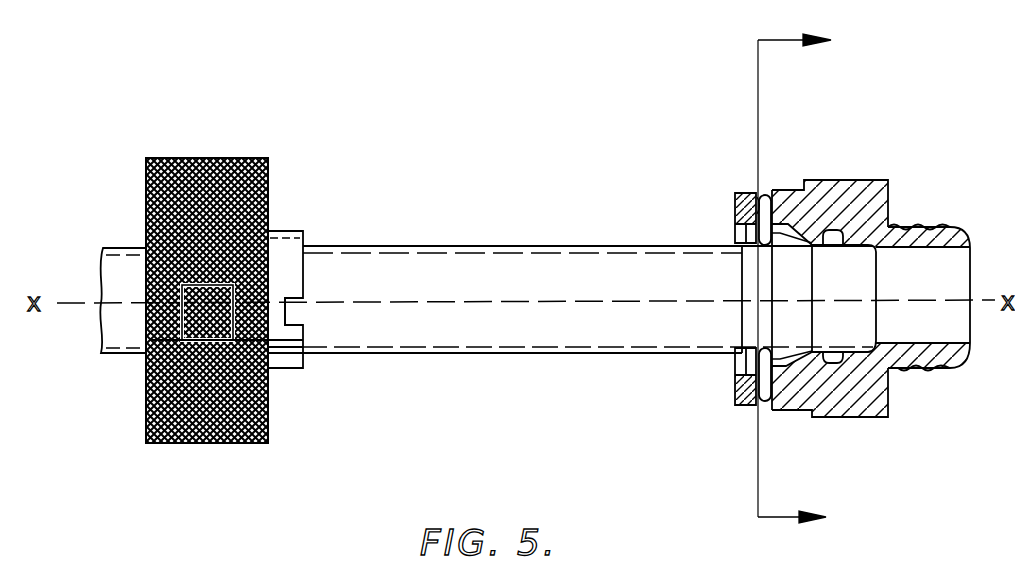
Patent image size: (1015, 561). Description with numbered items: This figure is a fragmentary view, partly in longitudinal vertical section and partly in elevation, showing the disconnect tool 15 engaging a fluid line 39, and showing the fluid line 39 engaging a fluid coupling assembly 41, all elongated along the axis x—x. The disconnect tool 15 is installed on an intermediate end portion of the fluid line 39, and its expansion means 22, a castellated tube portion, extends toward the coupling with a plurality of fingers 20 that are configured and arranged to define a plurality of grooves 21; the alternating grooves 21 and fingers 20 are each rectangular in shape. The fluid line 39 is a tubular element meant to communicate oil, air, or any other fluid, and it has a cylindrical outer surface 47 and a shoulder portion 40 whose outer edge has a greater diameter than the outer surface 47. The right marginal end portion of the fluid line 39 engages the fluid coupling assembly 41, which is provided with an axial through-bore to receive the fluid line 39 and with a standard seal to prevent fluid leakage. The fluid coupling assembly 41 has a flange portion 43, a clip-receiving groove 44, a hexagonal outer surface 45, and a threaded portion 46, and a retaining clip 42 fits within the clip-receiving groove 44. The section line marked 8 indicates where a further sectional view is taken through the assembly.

The section line 8- 8 is at (808, 283).
The disconnect tool 15 is at (236, 158).
The fingers 20 is at (306, 354).
The grooves 21 is at (296, 316).
The expansion means 22 is at (290, 231).
The fluid line 39 is at (565, 278).
The shoulder portion 40 is at (775, 355).
The fluid coupling assembly 41 is at (883, 179).
The retaining clip 42 is at (765, 194).
The flange portion 43 is at (735, 193).
The clip-receiving groove 44 is at (756, 197).
The hexagonal outer surface 45 is at (845, 179).
The threaded portion 46 is at (960, 200).
The cylindrical outer surface 47 is at (512, 245).